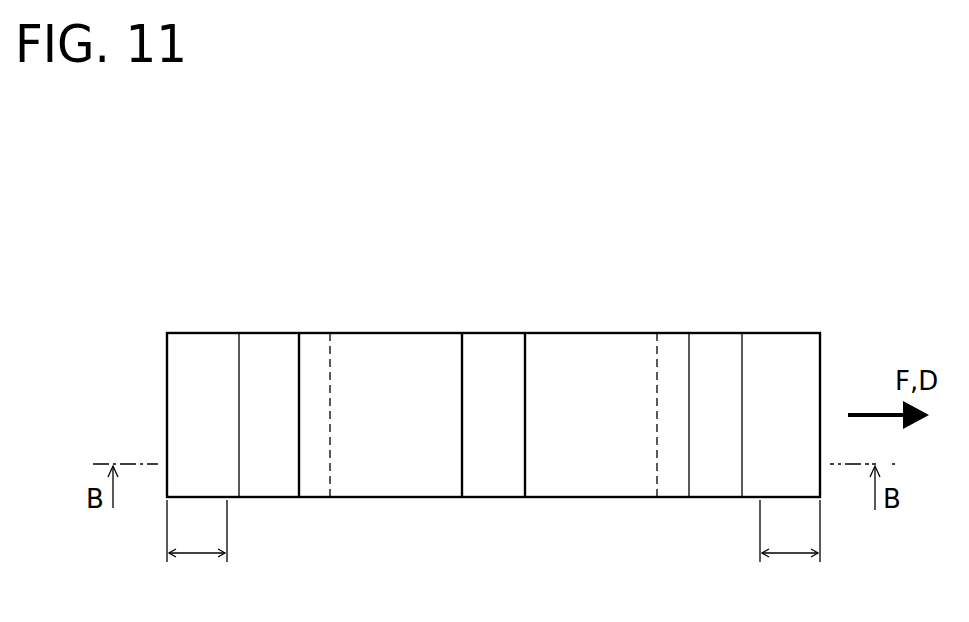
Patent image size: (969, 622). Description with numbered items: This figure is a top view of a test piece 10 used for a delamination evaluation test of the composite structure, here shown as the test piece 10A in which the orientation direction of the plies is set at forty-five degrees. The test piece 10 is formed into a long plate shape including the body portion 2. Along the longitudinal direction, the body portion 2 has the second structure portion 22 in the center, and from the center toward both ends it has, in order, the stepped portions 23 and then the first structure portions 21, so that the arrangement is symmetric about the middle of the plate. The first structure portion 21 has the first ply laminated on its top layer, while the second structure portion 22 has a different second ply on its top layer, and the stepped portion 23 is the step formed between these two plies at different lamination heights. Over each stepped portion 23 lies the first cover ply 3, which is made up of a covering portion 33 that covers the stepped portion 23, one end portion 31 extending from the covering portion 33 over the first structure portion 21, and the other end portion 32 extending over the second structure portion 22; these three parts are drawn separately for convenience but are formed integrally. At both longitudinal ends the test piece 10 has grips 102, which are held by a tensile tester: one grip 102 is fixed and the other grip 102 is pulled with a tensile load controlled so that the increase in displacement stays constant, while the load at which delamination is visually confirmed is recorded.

The test piece 10 is at (491, 310).
The test piece 10A is at (210, 198).
The body portion 2 is at (350, 502).
The first structure portion 21 is at (227, 466).
The second structure portion 22 is at (490, 483).
The stepped portion 23 is at (395, 483).
The first cover ply 3 is at (340, 332).
The one end portion 31 is at (260, 340).
The other end portion 32 is at (492, 348).
The covering portion 33 is at (380, 341).
The grip 102 is at (493, 531).